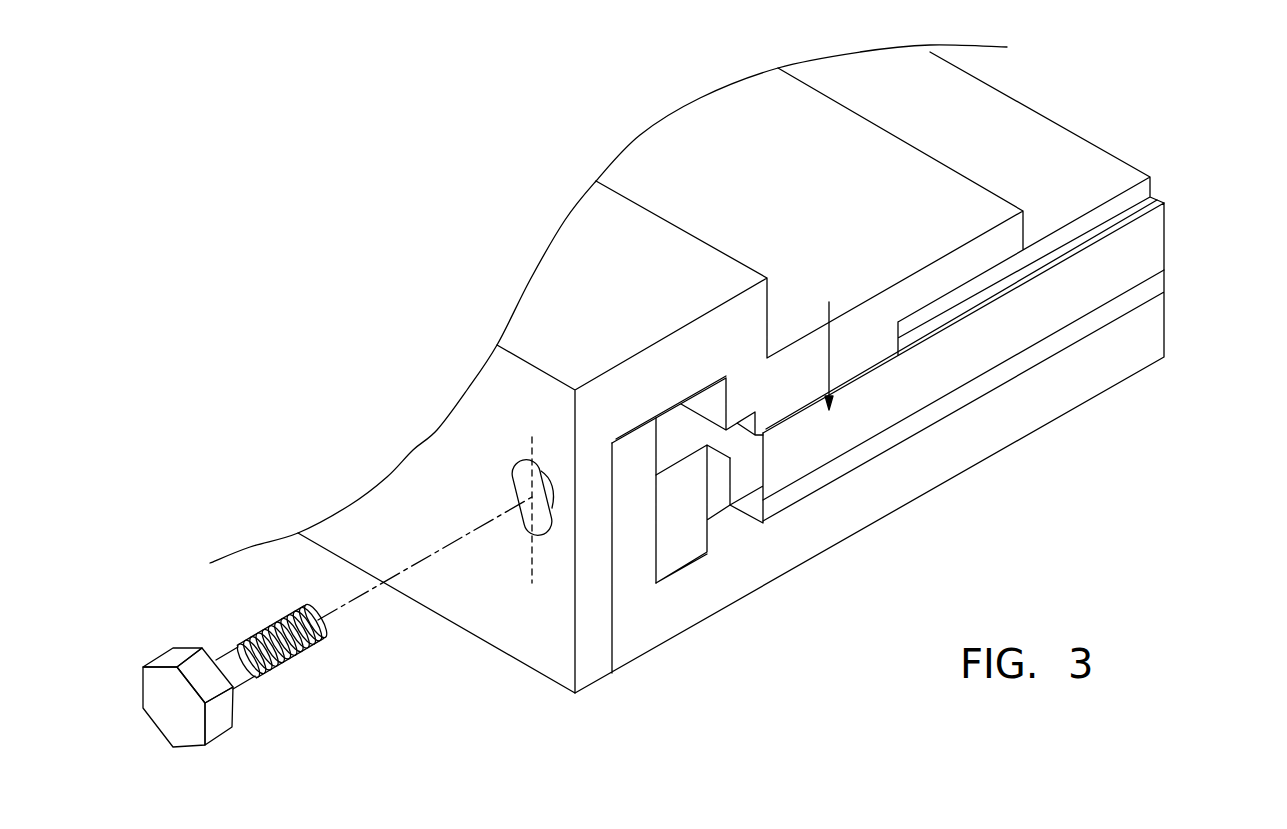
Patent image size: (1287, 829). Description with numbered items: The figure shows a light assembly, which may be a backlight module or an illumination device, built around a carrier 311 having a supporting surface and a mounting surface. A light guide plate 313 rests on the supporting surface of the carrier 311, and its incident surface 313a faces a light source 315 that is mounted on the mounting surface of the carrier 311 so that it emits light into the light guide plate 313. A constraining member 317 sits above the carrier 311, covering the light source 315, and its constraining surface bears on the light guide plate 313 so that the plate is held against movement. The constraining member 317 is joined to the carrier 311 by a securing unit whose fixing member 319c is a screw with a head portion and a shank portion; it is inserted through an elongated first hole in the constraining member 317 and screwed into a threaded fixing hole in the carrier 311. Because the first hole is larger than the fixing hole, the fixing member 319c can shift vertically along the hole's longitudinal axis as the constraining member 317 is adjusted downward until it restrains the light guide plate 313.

The carrier 311 is at (1120, 362).
The light guide plate 313 is at (1148, 248).
The incident surface 313a is at (747, 470).
The light source 315 is at (683, 530).
The constraining member 317 is at (668, 372).
The fixing member 319c is at (187, 715).